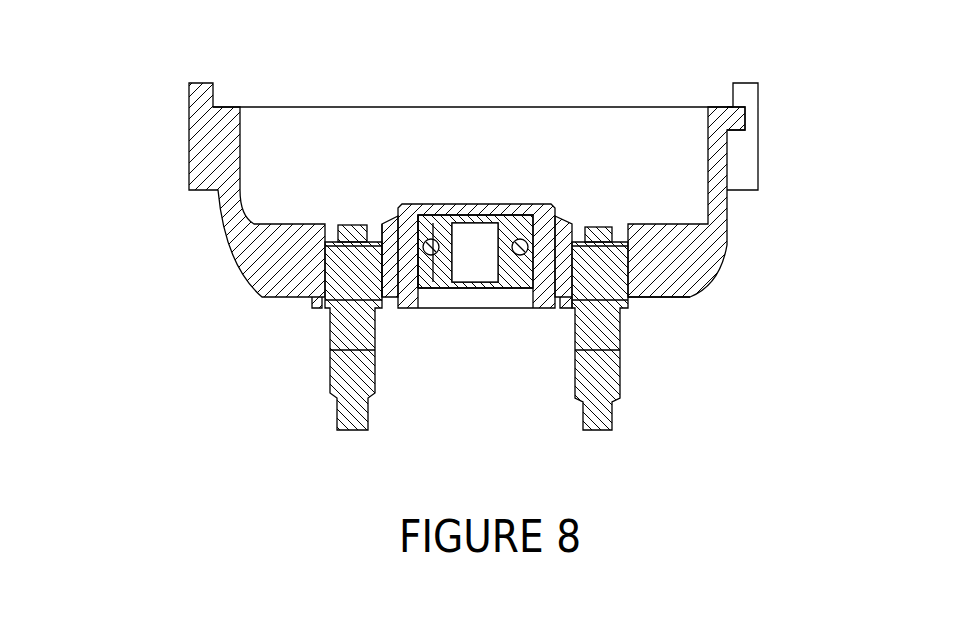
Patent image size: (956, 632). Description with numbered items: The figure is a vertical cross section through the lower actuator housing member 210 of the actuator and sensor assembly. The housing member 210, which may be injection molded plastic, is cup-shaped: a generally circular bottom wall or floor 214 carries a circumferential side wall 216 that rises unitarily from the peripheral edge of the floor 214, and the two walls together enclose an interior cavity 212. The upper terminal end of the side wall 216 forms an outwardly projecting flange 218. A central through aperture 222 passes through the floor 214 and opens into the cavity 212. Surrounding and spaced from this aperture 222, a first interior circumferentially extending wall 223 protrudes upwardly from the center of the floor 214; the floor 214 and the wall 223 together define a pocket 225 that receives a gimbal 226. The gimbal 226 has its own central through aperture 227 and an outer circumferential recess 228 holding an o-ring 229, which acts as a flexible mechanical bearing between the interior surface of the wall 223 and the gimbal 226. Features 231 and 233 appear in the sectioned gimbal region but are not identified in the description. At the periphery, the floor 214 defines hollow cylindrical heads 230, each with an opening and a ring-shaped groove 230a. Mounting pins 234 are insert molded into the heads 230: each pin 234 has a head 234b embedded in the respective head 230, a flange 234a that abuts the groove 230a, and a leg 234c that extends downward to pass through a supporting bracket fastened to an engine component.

The housing member 210 is at (688, 68).
The interior cavity 212 is at (291, 158).
The bottom wall 214 is at (645, 305).
The circumferential side wall 216 is at (722, 152).
The flange 218 is at (740, 118).
The central through aperture 222 is at (507, 297).
The first interior circumferentially extending wall 223 is at (388, 280).
The pocket 225 is at (566, 203).
The gimbal 226 is at (440, 277).
The central through aperture 227 is at (473, 233).
The circumferential recess 228 is at (408, 262).
The o-ring 229 is at (520, 238).
The peripheral head 230 is at (342, 223).
The ring-shaped groove 230a is at (314, 303).
The bearing retainer ring 231 is at (417, 200).
The bore 233 is at (453, 200).
The mounting pin 234 is at (628, 383).
The flange 234a is at (625, 310).
The head 234b is at (597, 262).
The leg 234c is at (610, 343).